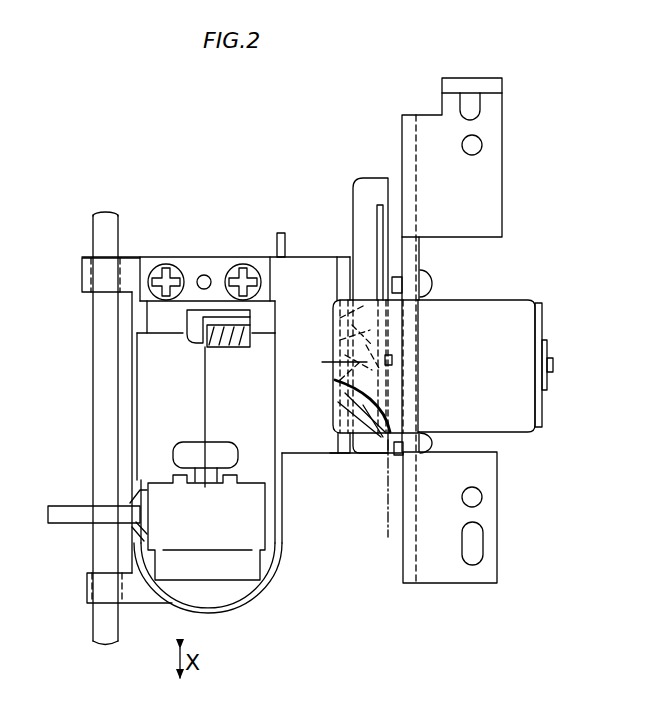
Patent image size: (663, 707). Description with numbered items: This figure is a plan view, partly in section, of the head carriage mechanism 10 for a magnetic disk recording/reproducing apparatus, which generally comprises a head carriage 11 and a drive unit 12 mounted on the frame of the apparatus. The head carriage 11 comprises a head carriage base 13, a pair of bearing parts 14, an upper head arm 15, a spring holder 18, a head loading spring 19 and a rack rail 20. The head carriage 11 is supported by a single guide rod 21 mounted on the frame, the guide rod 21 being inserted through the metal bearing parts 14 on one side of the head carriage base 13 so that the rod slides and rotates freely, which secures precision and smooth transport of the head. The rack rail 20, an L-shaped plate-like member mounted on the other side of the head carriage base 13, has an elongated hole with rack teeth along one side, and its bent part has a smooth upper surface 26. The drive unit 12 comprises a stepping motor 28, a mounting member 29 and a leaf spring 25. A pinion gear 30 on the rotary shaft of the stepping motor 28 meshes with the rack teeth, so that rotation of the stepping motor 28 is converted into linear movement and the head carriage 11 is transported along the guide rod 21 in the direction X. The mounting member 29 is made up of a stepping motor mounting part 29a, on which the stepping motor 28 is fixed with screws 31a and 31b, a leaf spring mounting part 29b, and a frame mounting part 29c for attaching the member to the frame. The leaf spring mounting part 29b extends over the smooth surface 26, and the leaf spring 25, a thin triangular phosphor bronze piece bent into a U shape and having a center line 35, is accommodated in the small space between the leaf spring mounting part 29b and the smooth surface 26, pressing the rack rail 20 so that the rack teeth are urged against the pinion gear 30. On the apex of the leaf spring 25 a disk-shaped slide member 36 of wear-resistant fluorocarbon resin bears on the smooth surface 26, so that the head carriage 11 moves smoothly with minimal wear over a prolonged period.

The head carriage mechanism 10 is at (257, 165).
The head carriage 11 is at (288, 565).
The drive unit 12 is at (436, 418).
The head carriage base 13 is at (303, 278).
The bearing parts 14 is at (82, 273).
The upper head arm 15 is at (272, 436).
The spring holder 18 is at (195, 312).
The head loading spring 19 is at (250, 340).
The rack rail 20 is at (348, 283).
The guide rod 21 is at (102, 237).
The leaf spring 25 is at (377, 417).
The smooth upper surface 26 is at (363, 207).
The stepping motor 28 is at (512, 327).
The mounting member 29 is at (485, 331).
The stepping motor mounting part 29a is at (408, 245).
The leaf spring mounting part 29b is at (336, 382).
The frame mounting part 29c is at (495, 122).
The pinion gear 30 is at (392, 357).
The screw 31a is at (426, 283).
The screw 31b is at (427, 435).
The center line 35 is at (330, 362).
The slide member 36 is at (386, 503).